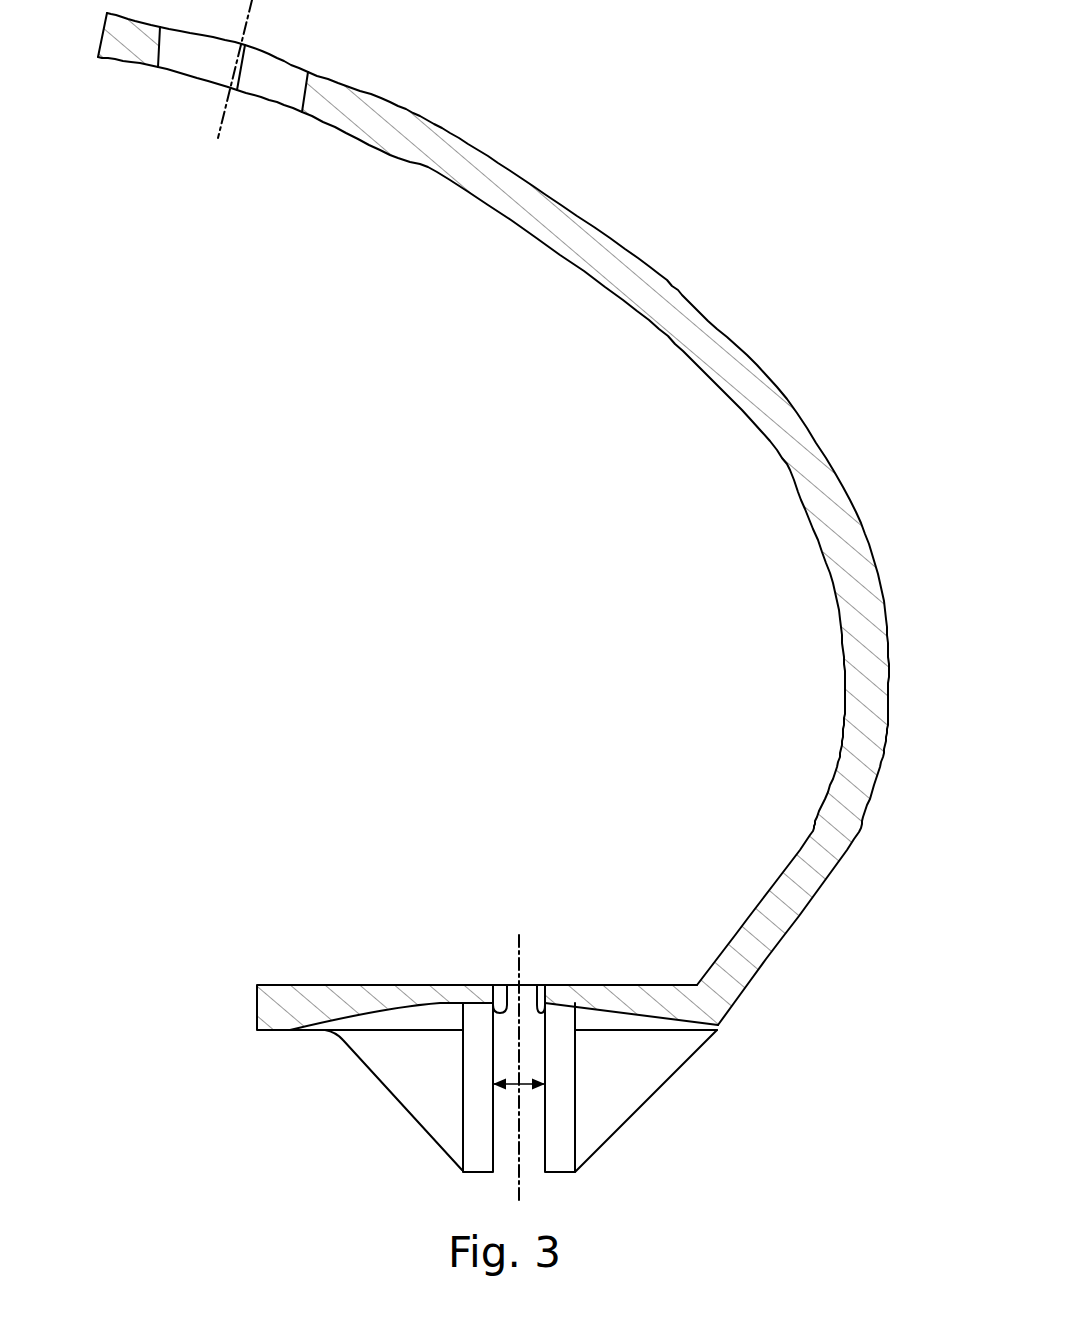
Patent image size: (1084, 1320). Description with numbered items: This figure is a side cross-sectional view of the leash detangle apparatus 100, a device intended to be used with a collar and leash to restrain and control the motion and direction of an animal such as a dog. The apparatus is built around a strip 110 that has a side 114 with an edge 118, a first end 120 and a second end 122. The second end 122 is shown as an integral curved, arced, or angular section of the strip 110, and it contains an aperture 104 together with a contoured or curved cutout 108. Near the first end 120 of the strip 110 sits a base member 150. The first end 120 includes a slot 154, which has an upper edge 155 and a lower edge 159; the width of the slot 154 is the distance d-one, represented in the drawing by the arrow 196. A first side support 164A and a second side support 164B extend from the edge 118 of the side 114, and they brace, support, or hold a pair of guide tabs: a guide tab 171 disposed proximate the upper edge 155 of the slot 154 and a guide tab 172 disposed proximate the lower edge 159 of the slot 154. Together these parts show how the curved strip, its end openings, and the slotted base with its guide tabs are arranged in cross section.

The leash detangle apparatus 100 is at (671, 184).
The aperture 104 is at (195, 60).
The cutout 108 is at (275, 82).
The strip 110 is at (491, 127).
The side 114 is at (697, 337).
The edge 118 is at (777, 387).
The first end 120 is at (715, 860).
The second end 122 is at (352, 196).
The base member 150 is at (291, 944).
The slot 154 is at (536, 923).
The upper edge 155 is at (509, 1003).
The lower edge 159 is at (534, 996).
The first side support 164A is at (403, 1057).
The second side support 164B is at (628, 1073).
The guide tab 171 is at (477, 1065).
The guide tab 172 is at (557, 1033).
The arrow 196 is at (512, 1078).